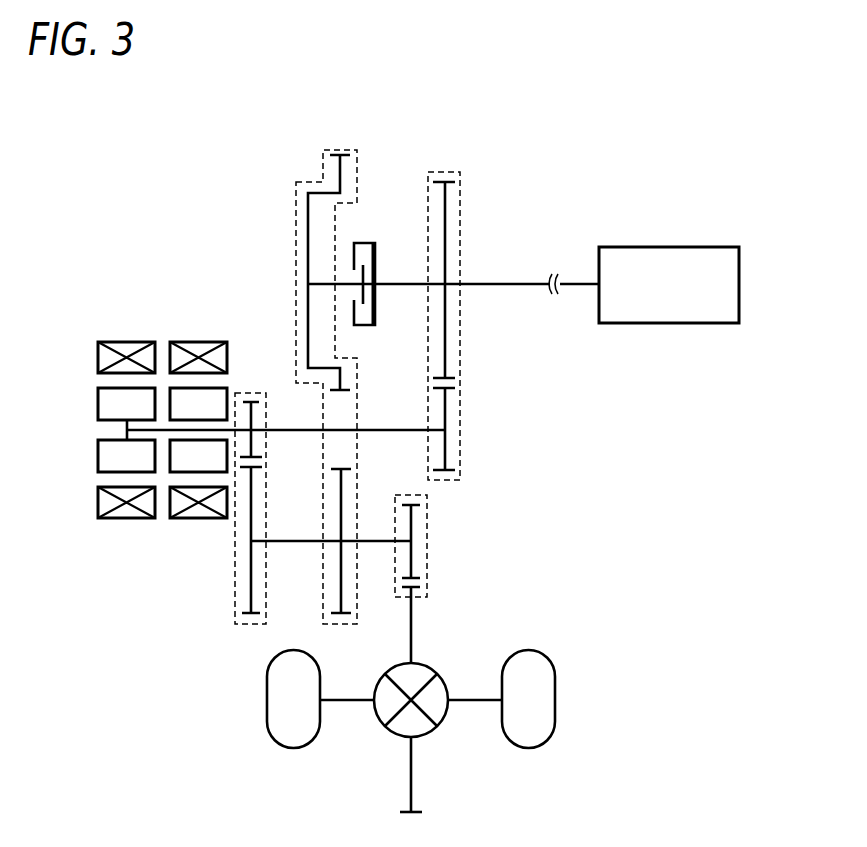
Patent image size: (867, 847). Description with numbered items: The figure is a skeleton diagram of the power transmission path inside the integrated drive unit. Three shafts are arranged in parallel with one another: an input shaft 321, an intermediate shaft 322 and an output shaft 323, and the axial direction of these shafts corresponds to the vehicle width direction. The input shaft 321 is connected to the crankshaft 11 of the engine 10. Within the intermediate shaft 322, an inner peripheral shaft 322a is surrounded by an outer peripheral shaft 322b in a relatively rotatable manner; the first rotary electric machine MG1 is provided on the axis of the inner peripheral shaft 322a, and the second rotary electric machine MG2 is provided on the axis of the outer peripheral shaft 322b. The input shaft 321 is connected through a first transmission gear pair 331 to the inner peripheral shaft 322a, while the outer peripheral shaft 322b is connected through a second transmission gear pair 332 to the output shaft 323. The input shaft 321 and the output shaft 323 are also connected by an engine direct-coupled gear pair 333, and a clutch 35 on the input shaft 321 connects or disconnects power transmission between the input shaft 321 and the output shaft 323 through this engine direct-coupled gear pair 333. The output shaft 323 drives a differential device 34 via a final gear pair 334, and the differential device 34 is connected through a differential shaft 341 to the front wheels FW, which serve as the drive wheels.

The engine 10 is at (674, 246).
The crankshaft 11 is at (577, 286).
The input shaft 321 is at (508, 282).
The clutch 35 is at (374, 260).
The engine direct-coupled gear pair 333 is at (296, 205).
The first transmission gear pair 331 is at (462, 408).
The intermediate shaft 322 is at (387, 428).
The inner peripheral shaft 322a is at (294, 432).
The outer peripheral shaft 322b is at (246, 416).
The output shaft 323 is at (375, 540).
The second transmission gear pair 332 is at (235, 577).
The final gear pair 334 is at (428, 527).
The differential device 34 is at (427, 735).
The differential shaft 341 is at (474, 697).
The first rotary electric machine MG1 is at (114, 340).
The second rotary electric machine MG2 is at (190, 340).
The front wheels FW is at (267, 702).